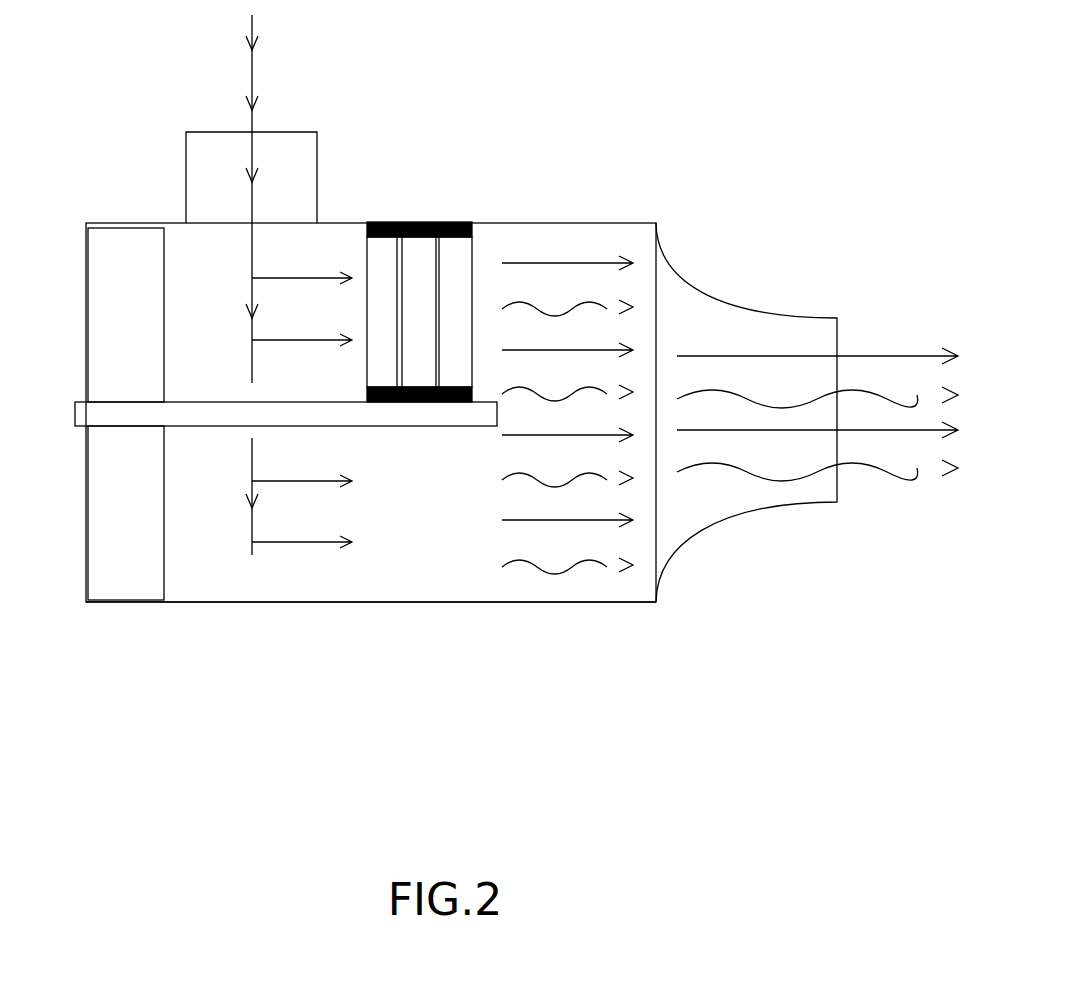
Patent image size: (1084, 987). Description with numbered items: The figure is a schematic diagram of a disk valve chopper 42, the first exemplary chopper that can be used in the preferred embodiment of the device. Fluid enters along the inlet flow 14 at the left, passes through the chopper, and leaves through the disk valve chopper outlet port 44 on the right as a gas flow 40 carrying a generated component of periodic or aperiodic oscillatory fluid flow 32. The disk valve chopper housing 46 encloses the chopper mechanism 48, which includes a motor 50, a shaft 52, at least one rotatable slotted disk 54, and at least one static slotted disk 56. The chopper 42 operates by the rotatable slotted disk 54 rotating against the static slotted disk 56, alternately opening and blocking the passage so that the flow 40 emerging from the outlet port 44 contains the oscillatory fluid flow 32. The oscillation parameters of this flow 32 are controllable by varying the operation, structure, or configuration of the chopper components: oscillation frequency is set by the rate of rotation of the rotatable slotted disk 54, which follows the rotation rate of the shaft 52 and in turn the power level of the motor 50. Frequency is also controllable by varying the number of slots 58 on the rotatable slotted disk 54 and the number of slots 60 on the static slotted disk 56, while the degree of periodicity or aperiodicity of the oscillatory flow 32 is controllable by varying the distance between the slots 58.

The exhaust gas flow 14 is at (274, 285).
The oscillatory fluid flow 32 is at (730, 423).
The gas flow 40 is at (605, 389).
The disk valve chopper 42 is at (376, 438).
The disk valve chopper outlet port 44 is at (687, 500).
The disk valve chopper housing 46 is at (290, 603).
The chopper mechanism 48 is at (194, 412).
The motor 50 is at (126, 414).
The shaft 52 is at (286, 412).
The rotatable slotted disk 54 is at (418, 222).
The static slotted disk 56 is at (454, 222).
The slots 58 is at (418, 312).
The slots 60 is at (418, 312).